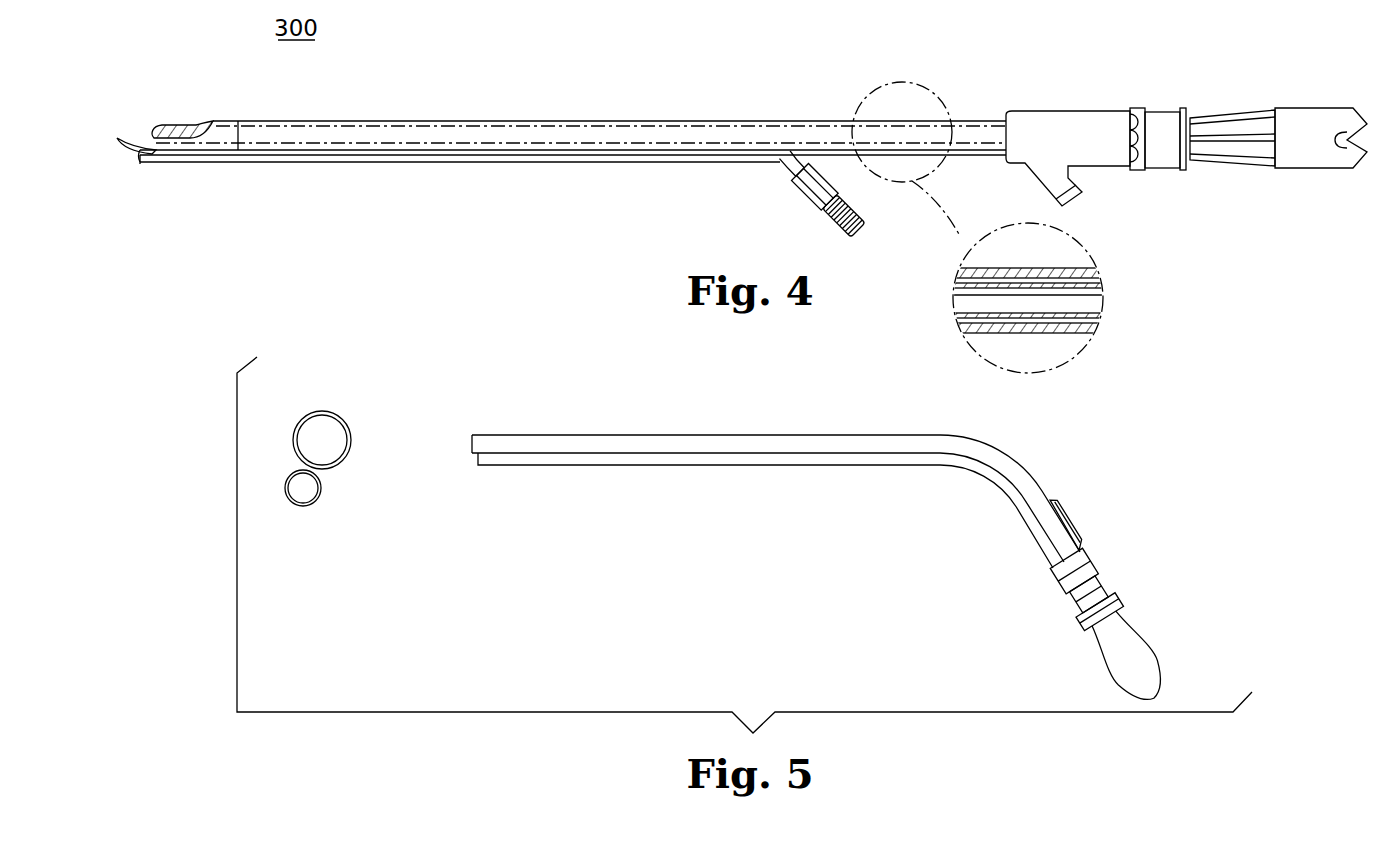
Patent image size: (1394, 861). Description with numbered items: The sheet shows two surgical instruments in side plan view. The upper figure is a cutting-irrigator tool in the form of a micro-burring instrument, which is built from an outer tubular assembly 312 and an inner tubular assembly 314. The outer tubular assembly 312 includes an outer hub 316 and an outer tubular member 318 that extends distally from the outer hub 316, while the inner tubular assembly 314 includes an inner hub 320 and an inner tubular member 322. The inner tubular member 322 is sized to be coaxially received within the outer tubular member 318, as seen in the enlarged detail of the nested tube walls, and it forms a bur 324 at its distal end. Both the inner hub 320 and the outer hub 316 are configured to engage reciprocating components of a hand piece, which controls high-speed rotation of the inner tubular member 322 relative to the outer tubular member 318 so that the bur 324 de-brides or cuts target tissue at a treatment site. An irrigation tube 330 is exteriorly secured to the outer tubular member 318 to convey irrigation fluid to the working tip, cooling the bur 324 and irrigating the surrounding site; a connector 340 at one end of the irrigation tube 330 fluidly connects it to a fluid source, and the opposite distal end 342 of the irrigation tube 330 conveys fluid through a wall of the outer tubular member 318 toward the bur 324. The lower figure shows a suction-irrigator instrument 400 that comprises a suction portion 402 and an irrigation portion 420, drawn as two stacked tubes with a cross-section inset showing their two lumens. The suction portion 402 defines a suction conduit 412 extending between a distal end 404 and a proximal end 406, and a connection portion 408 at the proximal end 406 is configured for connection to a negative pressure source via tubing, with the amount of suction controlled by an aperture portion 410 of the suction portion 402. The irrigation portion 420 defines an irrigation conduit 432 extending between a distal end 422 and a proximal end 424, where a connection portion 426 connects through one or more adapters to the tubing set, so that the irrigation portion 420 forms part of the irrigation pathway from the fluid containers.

In FIG. 4, the outer tubular assembly 312 is at (571, 118).
In FIG. 4, the inner tubular assembly 314 is at (150, 124).
In FIG. 4, the outer hub 316 is at (1078, 109).
In FIG. 4, the outer tubular member 318 is at (412, 118).
In FIG. 4, the inner hub 320 is at (1259, 107).
In FIG. 4, the inner tubular member 322 is at (975, 293).
In FIG. 4, the bur 324 is at (184, 122).
In FIG. 4, the irrigation tube 330 is at (488, 168).
In FIG. 4, the connector 340 is at (862, 232).
In FIG. 4, the distal end 342 is at (141, 166).
In FIG. 5, the suction-irrigator instrument 400 is at (757, 470).
In FIG. 5, the suction portion 402 is at (346, 424).
In FIG. 5, the distal end 404 is at (470, 436).
In FIG. 5, the proximal end 406 is at (1178, 688).
In FIG. 5, the connection portion 408 is at (1145, 632).
In FIG. 5, the aperture portion 410 is at (1086, 515).
In FIG. 5, the suction conduit 412 is at (312, 436).
In FIG. 5, the irrigation portion 420 is at (318, 506).
In FIG. 5, the distal end 422 is at (478, 466).
In FIG. 5, the proximal end 424 is at (1128, 598).
In FIG. 5, the connection portion 426 is at (1082, 582).
In FIG. 5, the irrigation conduit 432 is at (297, 496).